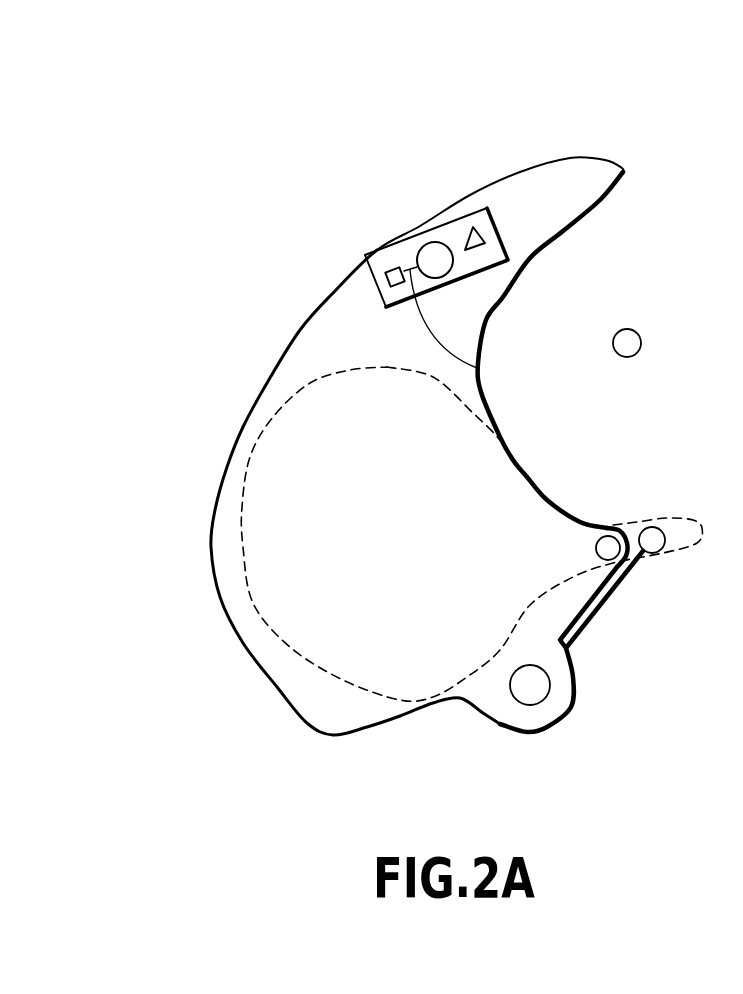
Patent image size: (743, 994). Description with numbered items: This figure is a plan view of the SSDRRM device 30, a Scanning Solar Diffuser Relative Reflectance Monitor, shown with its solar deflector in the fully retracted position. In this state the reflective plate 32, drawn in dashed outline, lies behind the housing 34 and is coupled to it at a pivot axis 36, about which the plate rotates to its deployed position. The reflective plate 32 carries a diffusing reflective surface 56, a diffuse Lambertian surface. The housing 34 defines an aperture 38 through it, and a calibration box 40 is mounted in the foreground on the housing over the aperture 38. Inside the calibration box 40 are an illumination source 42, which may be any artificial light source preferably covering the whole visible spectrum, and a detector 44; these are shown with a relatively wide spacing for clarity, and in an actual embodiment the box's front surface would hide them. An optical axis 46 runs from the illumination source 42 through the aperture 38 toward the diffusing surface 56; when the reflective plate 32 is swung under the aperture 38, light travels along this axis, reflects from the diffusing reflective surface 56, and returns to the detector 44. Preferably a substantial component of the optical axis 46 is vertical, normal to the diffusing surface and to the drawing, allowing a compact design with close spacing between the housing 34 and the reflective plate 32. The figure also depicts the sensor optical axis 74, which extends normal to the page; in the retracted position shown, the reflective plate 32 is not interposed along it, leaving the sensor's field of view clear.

The SSDRRM device 30 is at (634, 104).
The reflective plate 32 is at (467, 478).
The housing 34 is at (468, 302).
The pivot axis 36 is at (608, 548).
The aperture 38 is at (435, 260).
The calibration box 40 is at (503, 225).
The illumination source 42 is at (385, 300).
The detector 44 is at (470, 230).
The optical axis 46 is at (477, 368).
The diffusing reflective surface 56 is at (455, 765).
The sensor optical axis 74 is at (625, 345).